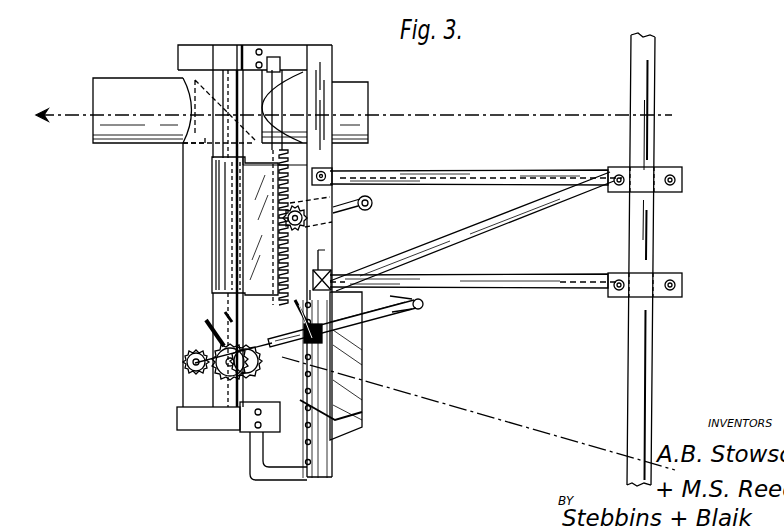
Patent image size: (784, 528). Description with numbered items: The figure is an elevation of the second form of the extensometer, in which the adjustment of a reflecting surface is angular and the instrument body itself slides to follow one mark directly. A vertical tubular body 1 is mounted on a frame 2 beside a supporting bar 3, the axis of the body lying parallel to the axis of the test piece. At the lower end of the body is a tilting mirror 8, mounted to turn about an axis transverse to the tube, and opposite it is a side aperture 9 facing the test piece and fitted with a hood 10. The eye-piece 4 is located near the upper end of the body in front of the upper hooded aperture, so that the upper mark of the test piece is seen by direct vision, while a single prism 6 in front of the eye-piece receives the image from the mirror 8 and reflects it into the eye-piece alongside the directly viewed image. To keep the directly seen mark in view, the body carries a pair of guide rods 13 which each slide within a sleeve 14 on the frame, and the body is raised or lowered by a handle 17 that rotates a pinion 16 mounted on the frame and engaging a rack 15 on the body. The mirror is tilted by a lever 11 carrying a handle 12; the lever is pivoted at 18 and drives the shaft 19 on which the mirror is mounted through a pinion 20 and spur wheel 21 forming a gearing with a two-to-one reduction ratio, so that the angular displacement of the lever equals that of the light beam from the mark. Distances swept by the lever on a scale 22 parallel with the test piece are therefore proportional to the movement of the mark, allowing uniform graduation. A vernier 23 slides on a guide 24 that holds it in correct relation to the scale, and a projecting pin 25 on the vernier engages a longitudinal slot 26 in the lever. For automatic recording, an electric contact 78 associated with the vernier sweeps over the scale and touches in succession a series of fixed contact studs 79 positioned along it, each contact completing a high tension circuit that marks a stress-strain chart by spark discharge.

The tubular body 1 is at (185, 198).
The frame 2 is at (466, 175).
The supporting bar 3 is at (642, 97).
The eye-piece 4 is at (139, 90).
The reflecting prism 6 is at (186, 143).
The tilting mirror 8 is at (267, 107).
The side aperture 9 is at (367, 110).
The hood 10 is at (336, 357).
The lever 11 is at (411, 313).
The handle 12 is at (426, 305).
The guide rods 13 is at (229, 88).
The sleeve 14 is at (213, 243).
The rack 15 is at (288, 174).
The pinion 16 is at (310, 229).
The handle 17 is at (372, 205).
The lever pivot 18 is at (190, 365).
The shaft 19 is at (228, 368).
The pinion 20 is at (200, 352).
The spur wheel 21 is at (226, 372).
The scale 22 is at (332, 425).
The vernier 23 is at (330, 343).
The guide 24 is at (332, 383).
The projecting pin 25 is at (338, 333).
The longitudinal slot 26 is at (392, 313).
The electric contact 78 is at (301, 332).
The contact studs 79 is at (313, 280).